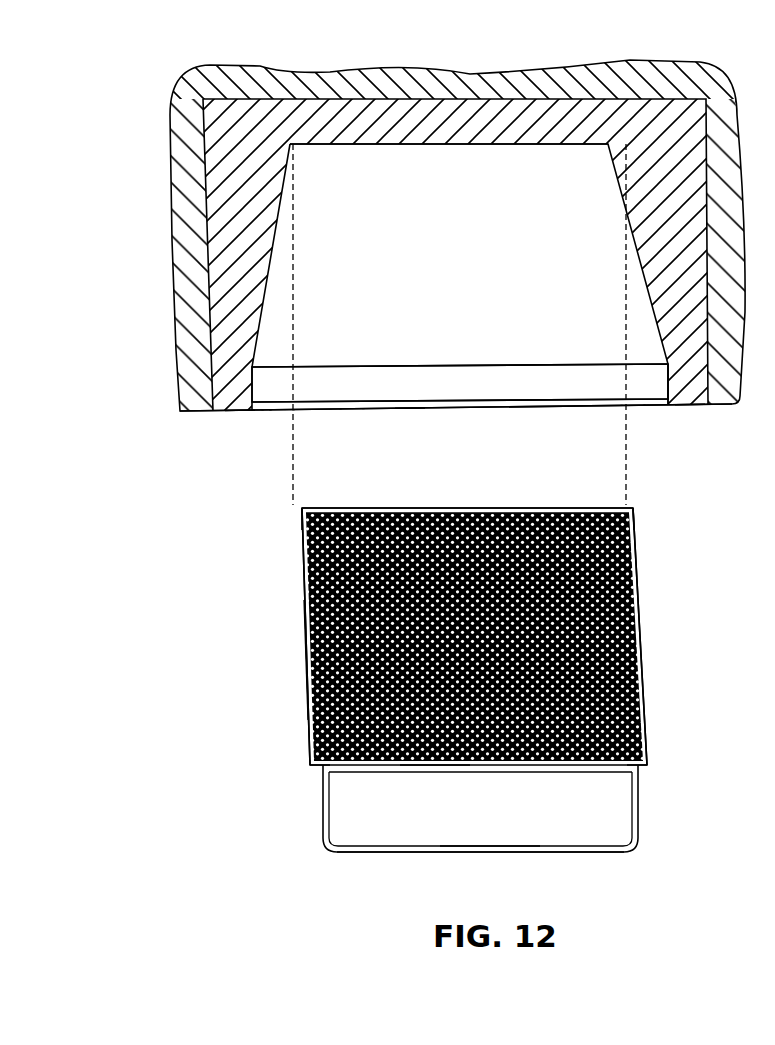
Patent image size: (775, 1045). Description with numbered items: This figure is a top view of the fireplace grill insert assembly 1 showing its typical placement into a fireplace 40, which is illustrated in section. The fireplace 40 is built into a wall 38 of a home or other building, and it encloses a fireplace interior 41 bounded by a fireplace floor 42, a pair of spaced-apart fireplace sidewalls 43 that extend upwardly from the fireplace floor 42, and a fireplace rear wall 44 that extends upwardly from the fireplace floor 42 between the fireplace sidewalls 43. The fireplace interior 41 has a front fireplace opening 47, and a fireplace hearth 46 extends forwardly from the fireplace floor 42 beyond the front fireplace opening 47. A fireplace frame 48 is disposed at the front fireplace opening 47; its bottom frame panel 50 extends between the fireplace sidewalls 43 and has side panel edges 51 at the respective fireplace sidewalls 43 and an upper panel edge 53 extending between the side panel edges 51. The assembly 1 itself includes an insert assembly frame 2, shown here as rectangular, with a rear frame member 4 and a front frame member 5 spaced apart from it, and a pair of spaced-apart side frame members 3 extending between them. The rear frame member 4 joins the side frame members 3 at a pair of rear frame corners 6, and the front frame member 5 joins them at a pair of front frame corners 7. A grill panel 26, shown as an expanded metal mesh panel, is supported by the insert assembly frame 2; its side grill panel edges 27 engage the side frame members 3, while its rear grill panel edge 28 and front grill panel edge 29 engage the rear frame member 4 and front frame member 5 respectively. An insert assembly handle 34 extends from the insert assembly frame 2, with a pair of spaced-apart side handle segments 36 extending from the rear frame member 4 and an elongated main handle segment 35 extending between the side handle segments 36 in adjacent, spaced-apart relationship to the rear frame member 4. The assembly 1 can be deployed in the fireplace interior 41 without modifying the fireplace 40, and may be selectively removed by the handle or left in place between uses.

The fireplace grill insert assembly 1 is at (230, 641).
The insert assembly frame 2 is at (647, 620).
The side frame members 3 is at (300, 704).
The rear frame member 4 is at (612, 773).
The front frame member 5 is at (545, 500).
The rear frame corners 6 is at (318, 770).
The front frame corners 7 is at (300, 508).
The grill panel 26 is at (300, 668).
The side grill panel edges 27 is at (301, 622).
The rear grill panel edge 28 is at (432, 776).
The front grill panel edge 29 is at (465, 507).
The insert assembly handle 34 is at (421, 862).
The main handle segment 35 is at (487, 848).
The side handle segments 36 is at (323, 806).
The wall 38 is at (190, 411).
The fireplace 40 is at (186, 186).
The fireplace interior 41 is at (384, 166).
The fireplace floor 42 is at (477, 258).
The fireplace sidewalls 43 is at (296, 262).
The fireplace rear wall 44 is at (511, 150).
The fireplace hearth 46 is at (479, 453).
The front fireplace opening 47 is at (672, 405).
The fireplace frame 48 is at (392, 392).
The bottom frame panel 50 is at (410, 409).
The side panel edges 51 is at (240, 411).
The upper panel edge 53 is at (553, 405).